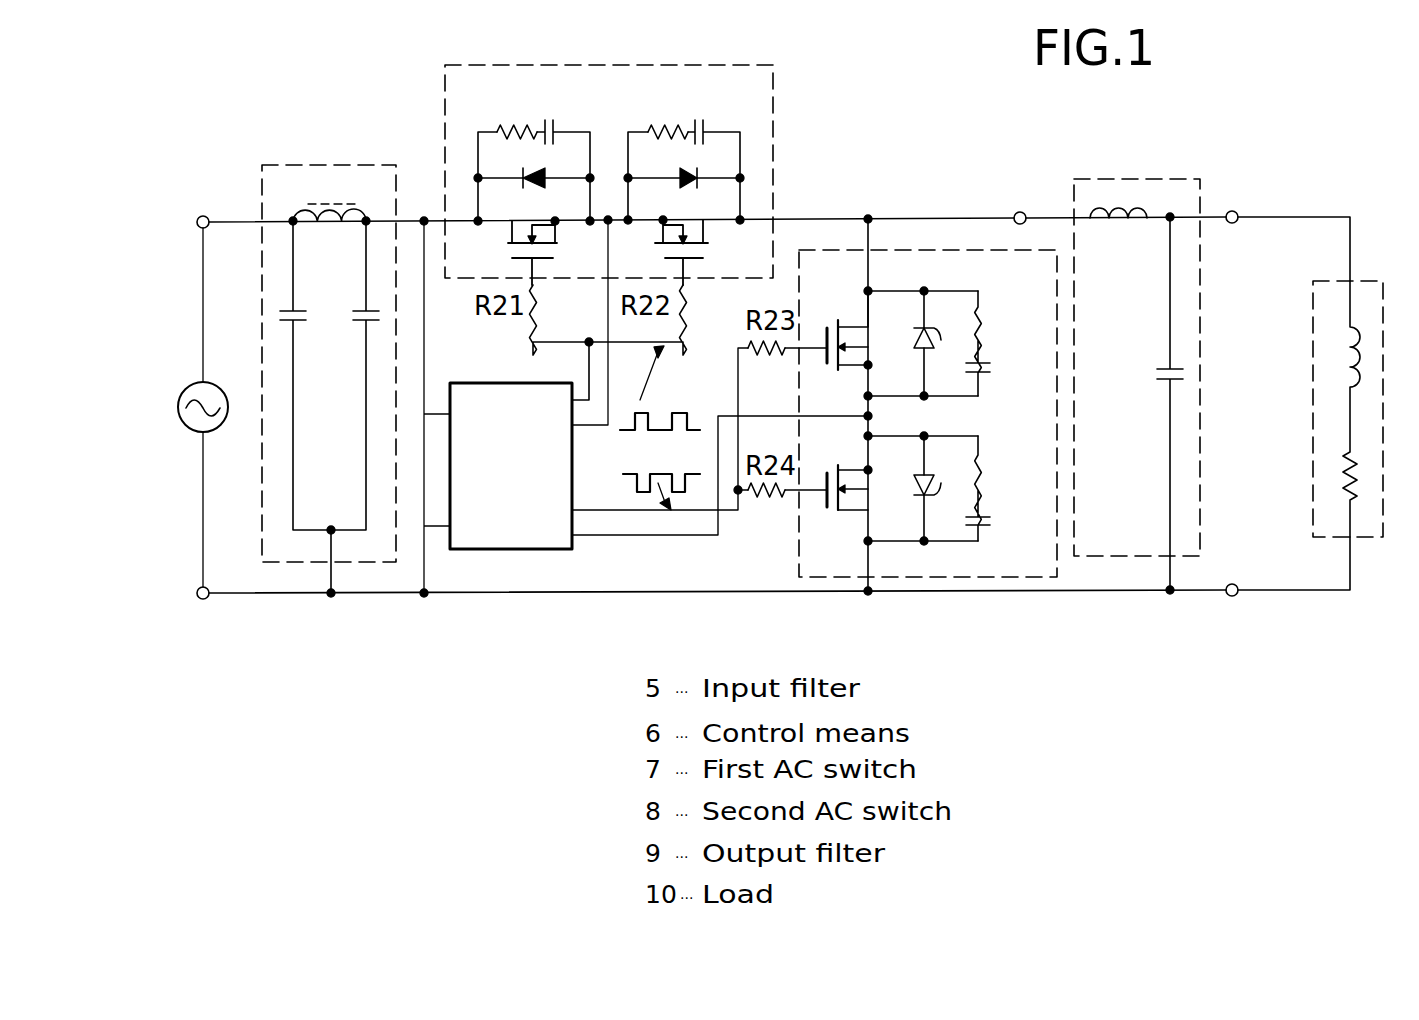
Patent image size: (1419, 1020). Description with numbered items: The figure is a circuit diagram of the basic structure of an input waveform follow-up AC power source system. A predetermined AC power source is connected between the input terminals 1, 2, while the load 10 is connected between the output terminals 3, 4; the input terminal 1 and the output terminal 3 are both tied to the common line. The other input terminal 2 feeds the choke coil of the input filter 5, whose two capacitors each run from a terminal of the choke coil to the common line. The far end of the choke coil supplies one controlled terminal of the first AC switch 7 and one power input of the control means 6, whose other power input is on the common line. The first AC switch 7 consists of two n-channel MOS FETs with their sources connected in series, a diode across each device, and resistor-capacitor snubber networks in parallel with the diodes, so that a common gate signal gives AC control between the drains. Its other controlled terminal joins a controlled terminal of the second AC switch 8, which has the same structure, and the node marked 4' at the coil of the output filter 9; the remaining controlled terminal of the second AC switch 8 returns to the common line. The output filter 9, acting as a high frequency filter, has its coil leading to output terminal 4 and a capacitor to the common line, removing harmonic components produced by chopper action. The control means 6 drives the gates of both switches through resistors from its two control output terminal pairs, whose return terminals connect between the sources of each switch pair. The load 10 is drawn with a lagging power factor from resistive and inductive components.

The input terminal 1 is at (193, 594).
The input terminal 2 is at (191, 223).
The output terminal 3 is at (1230, 607).
The output terminal 4 is at (1229, 200).
The intermediate output node 4' is at (1018, 200).
The input filter 5 is at (318, 164).
The control means 6 is at (522, 383).
The first AC switch 7 is at (775, 88).
The second AC switch 8 is at (895, 250).
The output filter 9 is at (1128, 179).
The load 10 is at (1360, 281).